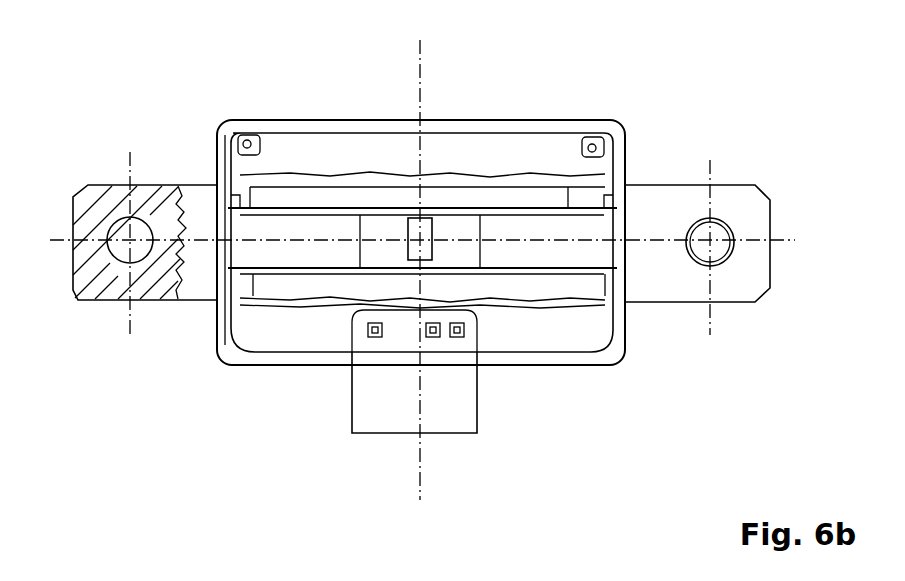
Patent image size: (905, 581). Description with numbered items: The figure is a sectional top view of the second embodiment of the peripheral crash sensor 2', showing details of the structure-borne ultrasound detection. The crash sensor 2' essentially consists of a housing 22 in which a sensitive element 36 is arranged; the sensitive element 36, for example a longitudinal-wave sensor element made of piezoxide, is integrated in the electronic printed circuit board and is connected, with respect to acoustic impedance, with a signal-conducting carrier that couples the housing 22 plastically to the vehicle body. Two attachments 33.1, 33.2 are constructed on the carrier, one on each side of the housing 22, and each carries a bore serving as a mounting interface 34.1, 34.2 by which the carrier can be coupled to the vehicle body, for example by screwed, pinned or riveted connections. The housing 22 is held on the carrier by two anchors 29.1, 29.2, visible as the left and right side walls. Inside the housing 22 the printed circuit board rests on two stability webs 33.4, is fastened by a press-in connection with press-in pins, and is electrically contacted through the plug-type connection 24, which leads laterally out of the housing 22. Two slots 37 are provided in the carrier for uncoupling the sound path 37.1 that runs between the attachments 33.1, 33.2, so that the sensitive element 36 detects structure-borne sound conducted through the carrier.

The crash sensor 2' is at (372, 57).
The housing 22 is at (512, 125).
The plug-type connection 24 is at (385, 425).
The anchor 29.1 is at (215, 175).
The anchor 29.2 is at (620, 187).
The attachment 33.1 is at (175, 280).
The attachment 33.2 is at (643, 283).
The stability web 33.4 is at (490, 195).
The mounting interface 34.1 is at (122, 245).
The mounting interface 34.2 is at (718, 257).
The sensitive element 36 is at (432, 217).
The slot 37 is at (553, 200).
The sound path 37.1 is at (275, 227).